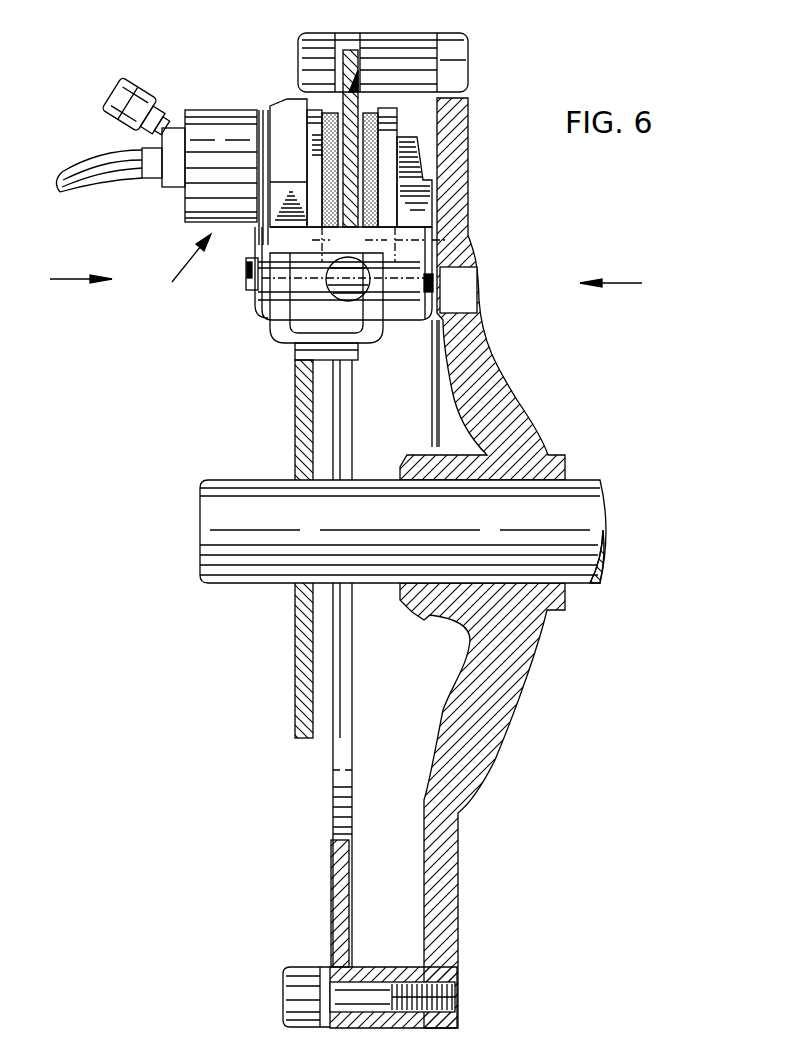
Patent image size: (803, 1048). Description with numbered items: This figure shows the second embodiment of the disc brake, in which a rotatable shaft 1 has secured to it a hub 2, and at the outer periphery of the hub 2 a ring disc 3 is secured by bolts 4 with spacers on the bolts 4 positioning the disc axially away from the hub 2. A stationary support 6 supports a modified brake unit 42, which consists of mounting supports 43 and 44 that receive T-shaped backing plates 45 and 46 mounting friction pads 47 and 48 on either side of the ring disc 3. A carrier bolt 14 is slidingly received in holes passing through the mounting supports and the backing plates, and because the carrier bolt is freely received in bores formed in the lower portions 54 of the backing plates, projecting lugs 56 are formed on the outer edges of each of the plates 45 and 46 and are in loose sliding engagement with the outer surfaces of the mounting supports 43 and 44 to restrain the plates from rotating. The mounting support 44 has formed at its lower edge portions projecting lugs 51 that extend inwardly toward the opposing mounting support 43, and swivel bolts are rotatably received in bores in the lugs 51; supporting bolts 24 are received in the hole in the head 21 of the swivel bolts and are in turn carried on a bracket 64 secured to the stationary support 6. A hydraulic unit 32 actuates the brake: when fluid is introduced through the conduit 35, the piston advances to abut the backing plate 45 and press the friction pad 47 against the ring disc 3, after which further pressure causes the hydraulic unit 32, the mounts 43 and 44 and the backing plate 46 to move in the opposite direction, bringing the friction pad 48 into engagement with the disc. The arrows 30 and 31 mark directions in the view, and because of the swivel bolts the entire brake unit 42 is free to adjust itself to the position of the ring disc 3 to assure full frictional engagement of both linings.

The rotatable shaft 1 is at (222, 516).
The hub 2 is at (475, 692).
The ring disc 3 is at (347, 102).
The bolts 4 is at (313, 52).
The stationary support 6 is at (302, 668).
The carrier bolt 14 is at (247, 270).
The head 21 is at (350, 313).
The supporting bolts 24 is at (303, 310).
The direction of motion 30 is at (72, 278).
The direction of motion 31 is at (618, 283).
The hydraulic unit 32 is at (212, 135).
The conduit 35 is at (97, 163).
The brake unit 42 is at (178, 269).
The mounting support 43 is at (268, 239).
The mounting support 44 is at (417, 238).
The backing plate 45 is at (315, 132).
The backing plate 46 is at (397, 112).
The friction pad 47 is at (320, 140).
The friction pad 48 is at (375, 137).
The projecting lugs 51 is at (430, 280).
The lower portions 54 is at (353, 252).
The projecting lugs 56 is at (292, 190).
The bracket 64 is at (282, 328).